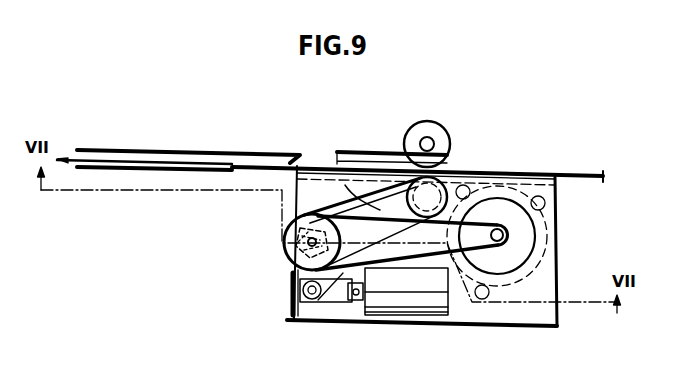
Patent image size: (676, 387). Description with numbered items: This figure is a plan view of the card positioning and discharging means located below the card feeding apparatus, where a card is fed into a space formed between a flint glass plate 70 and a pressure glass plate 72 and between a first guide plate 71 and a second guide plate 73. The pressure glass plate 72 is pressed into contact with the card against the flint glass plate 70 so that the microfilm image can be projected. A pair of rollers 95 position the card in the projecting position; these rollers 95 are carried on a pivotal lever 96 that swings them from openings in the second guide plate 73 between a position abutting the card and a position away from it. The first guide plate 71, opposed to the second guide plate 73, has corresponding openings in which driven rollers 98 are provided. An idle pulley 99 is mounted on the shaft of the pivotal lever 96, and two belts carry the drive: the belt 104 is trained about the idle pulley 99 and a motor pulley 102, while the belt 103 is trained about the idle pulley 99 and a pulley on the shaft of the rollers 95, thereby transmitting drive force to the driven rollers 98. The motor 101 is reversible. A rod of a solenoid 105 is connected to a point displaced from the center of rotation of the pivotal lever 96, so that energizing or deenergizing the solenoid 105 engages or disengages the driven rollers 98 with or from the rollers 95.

The flint glass plate 70 is at (200, 152).
The first guide plate 71 is at (385, 152).
The pressure glass plate 72 is at (148, 169).
The second guide plate 73 is at (522, 176).
The rollers 95 is at (450, 168).
The pivotal lever 96 is at (362, 200).
The driven rollers 98 is at (443, 133).
The idle pulley 99 is at (286, 253).
The motor 101 is at (530, 257).
The motor pulley 102 is at (517, 233).
The belt 103 is at (377, 205).
The belt 104 is at (380, 244).
The solenoid 105 is at (404, 316).